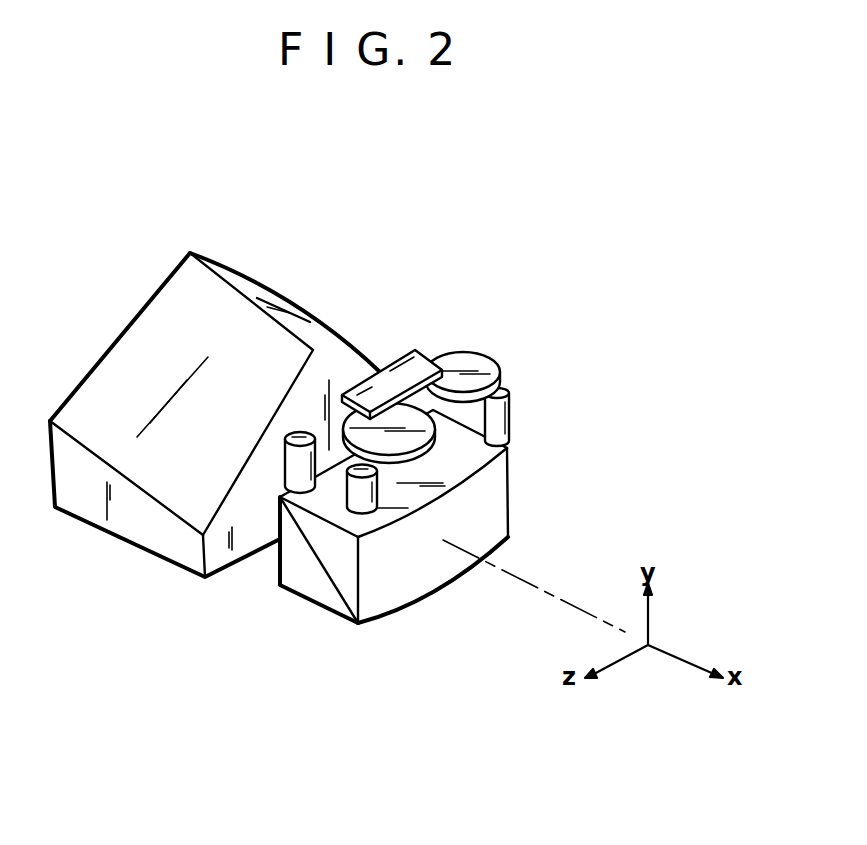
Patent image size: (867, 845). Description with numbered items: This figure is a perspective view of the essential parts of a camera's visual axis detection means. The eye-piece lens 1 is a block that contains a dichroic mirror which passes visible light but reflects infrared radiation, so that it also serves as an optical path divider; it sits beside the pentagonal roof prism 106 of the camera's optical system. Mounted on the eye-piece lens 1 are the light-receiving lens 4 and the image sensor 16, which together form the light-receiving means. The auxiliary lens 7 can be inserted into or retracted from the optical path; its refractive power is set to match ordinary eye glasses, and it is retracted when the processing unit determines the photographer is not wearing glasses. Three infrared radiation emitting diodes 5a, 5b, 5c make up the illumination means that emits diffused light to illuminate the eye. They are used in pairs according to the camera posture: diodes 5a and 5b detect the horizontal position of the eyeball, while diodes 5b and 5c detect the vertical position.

The pentagonal roof prism 106 is at (281, 293).
The eye-piece lens 1 is at (512, 506).
The light-receiving lens 4 is at (422, 448).
The auxiliary lens 7 is at (484, 357).
The image sensor 16 is at (398, 368).
The infrared radiation emitting diode 5a is at (510, 392).
The infrared radiation emitting diode 5b is at (363, 497).
The infrared radiation emitting diode 5c is at (285, 460).